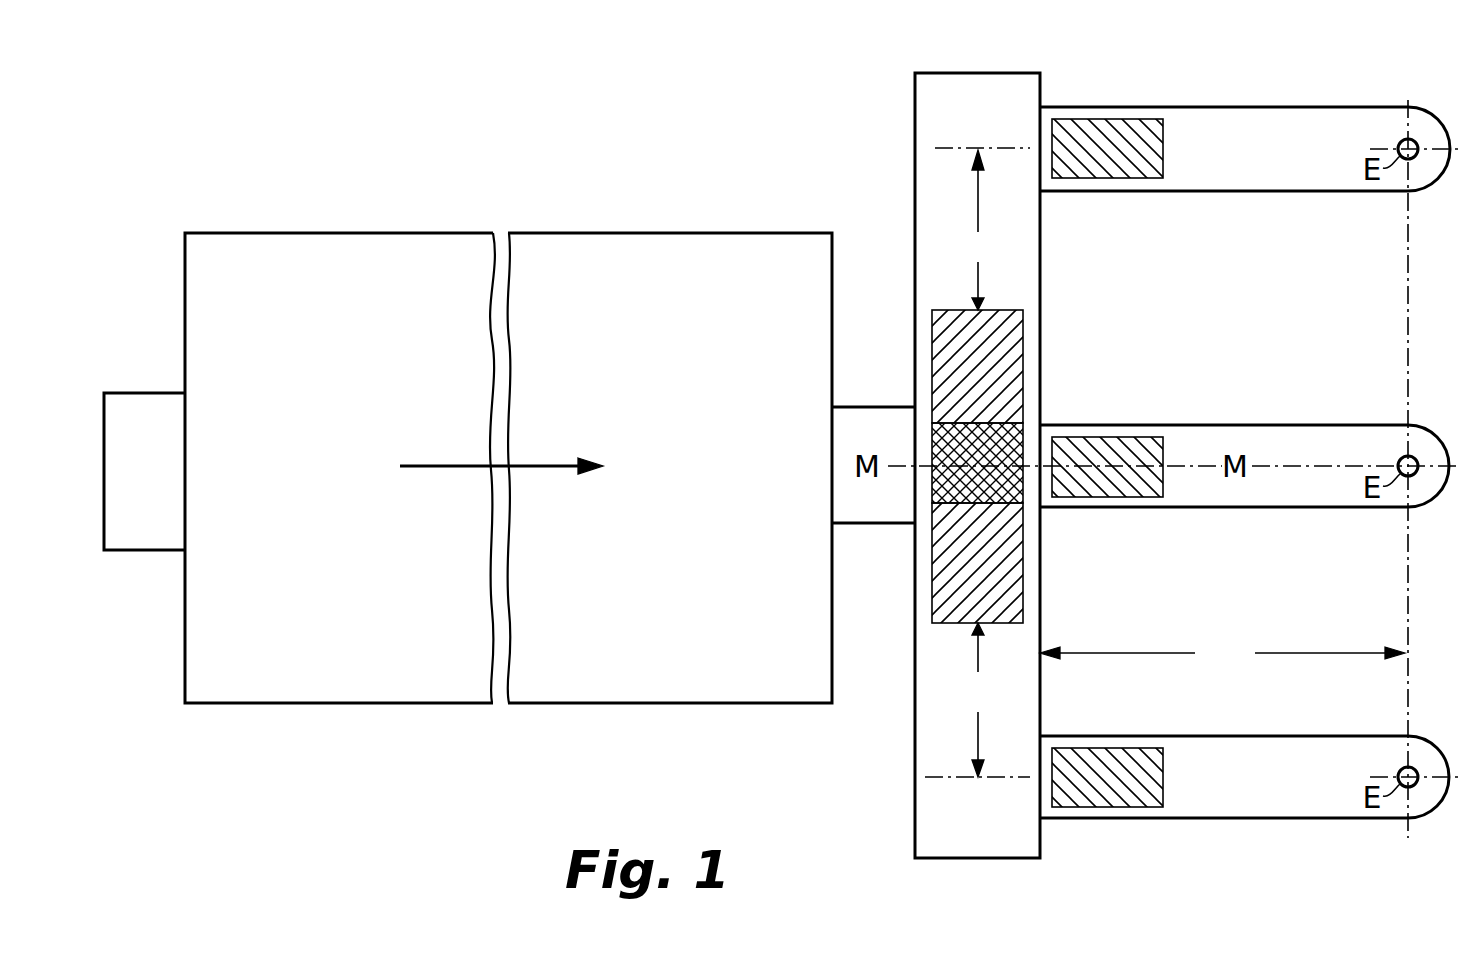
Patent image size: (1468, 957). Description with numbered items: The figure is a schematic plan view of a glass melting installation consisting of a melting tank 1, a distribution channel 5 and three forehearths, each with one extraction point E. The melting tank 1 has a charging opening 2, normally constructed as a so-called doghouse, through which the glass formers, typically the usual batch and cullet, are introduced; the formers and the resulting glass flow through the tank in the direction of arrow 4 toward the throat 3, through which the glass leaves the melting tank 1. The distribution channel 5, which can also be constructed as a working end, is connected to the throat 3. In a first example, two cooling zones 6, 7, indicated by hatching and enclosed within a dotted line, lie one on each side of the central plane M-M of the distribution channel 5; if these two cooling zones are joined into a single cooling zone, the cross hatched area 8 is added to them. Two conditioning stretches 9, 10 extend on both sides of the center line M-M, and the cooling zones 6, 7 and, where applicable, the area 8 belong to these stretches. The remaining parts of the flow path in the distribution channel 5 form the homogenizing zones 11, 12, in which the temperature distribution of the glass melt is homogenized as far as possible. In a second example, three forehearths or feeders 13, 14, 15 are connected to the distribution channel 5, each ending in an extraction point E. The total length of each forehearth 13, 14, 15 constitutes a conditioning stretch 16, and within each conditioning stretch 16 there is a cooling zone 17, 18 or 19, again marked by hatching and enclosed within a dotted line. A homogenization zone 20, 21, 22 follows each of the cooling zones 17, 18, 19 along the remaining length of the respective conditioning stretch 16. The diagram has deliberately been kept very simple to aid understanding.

The melting tank 1 is at (537, 688).
The charging opening 2 is at (148, 410).
The throat 3 is at (876, 524).
The arrow 4 is at (501, 487).
The distribution channel 5 is at (903, 752).
The cooling zone 6 is at (1052, 310).
The cooling zone 7 is at (1052, 505).
The cross hatched area 8 is at (950, 448).
The conditioning stretch 9 is at (977, 230).
The conditioning stretch 10 is at (977, 700).
The homogenizing zone 11 is at (900, 145).
The homogenizing zone 12 is at (900, 780).
The forehearth 13 is at (1288, 180).
The forehearth 14 is at (1298, 497).
The forehearth 15 is at (1272, 806).
The conditioning stretch 16 is at (1222, 653).
The cooling zone 17 is at (1112, 168).
The cooling zone 18 is at (1125, 485).
The cooling zone 19 is at (1112, 792).
The homogenization zone 20 is at (1172, 94).
The homogenization zone 21 is at (1405, 410).
The homogenization zone 22 is at (1405, 720).